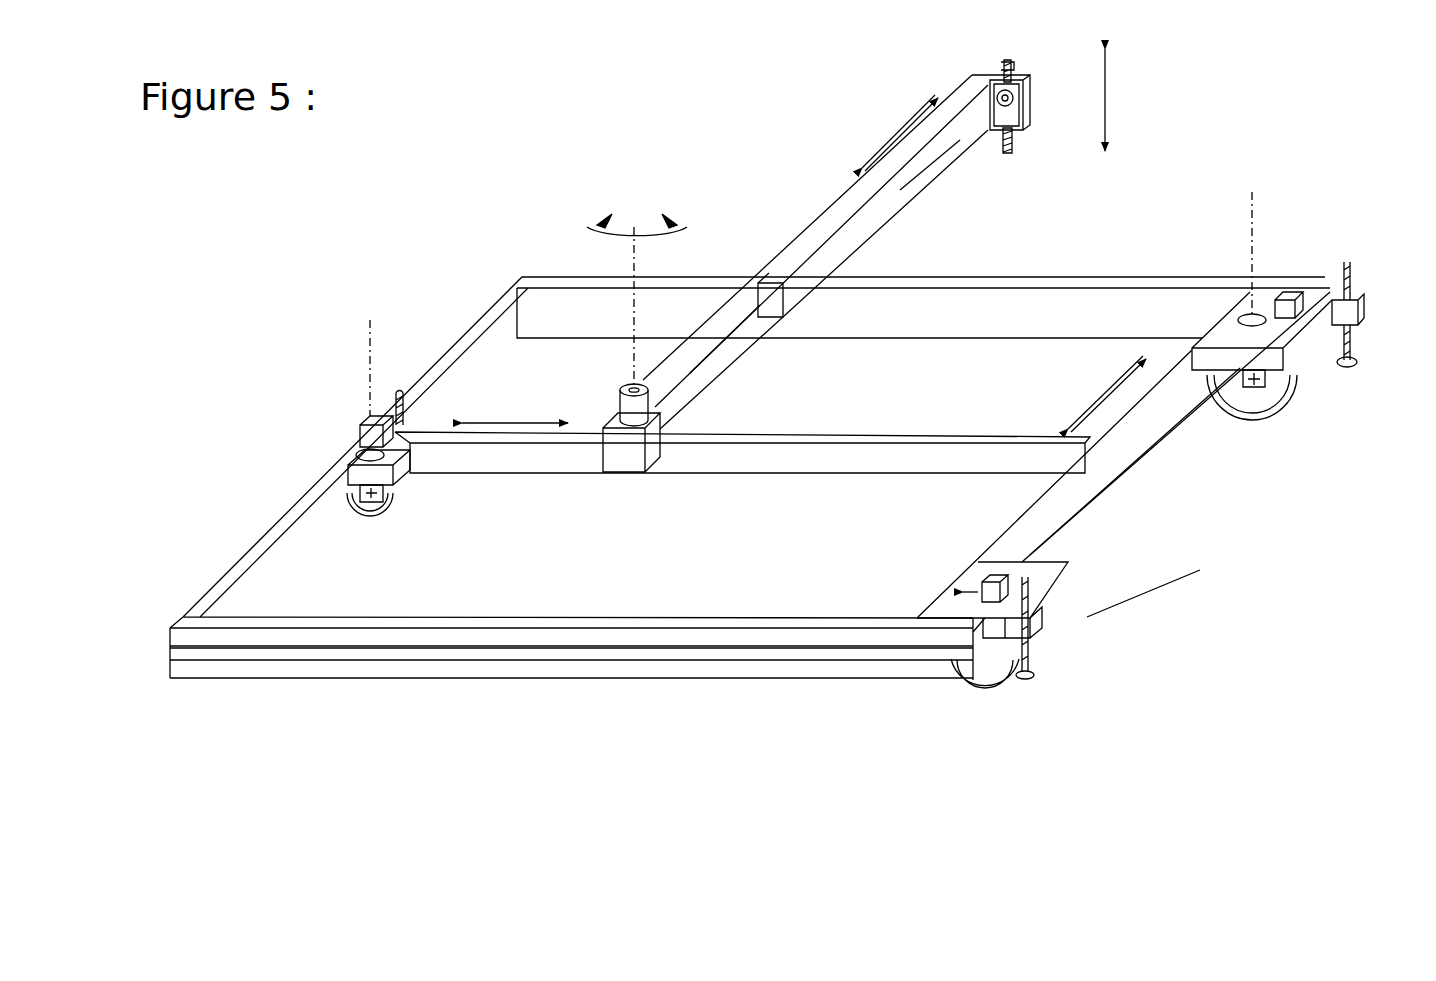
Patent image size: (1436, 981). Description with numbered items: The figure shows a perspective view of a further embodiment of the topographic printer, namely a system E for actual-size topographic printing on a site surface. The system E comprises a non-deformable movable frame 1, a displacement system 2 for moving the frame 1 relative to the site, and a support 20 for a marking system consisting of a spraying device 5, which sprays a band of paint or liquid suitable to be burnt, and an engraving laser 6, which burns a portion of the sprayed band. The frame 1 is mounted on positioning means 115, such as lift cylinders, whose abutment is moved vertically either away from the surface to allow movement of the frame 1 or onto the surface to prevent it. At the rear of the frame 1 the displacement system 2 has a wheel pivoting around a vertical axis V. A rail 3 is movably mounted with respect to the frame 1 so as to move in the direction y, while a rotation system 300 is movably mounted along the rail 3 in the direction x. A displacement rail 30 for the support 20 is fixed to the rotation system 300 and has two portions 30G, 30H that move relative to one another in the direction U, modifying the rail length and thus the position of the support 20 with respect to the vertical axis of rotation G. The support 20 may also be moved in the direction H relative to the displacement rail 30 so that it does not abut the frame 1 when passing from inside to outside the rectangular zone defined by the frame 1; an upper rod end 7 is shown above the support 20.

The frame 1 is at (420, 647).
The displacement system 2 is at (1045, 635).
The rail 3 is at (867, 460).
The rotation system 300 is at (619, 398).
The displacement rail 30 is at (812, 222).
The portion of the displacement rail 30G is at (700, 362).
The portion of the displacement rail 30H is at (932, 158).
The support 20 is at (1028, 76).
The engraving laser 6 is at (1030, 95).
The upper rod end 7 is at (1003, 65).
The spraying device 5 is at (1022, 135).
The positioning means 115 is at (1365, 293).
The system E is at (403, 270).
The vertical axis of rotation G is at (633, 227).
The direction H is at (1108, 98).
The direction U is at (893, 122).
The vertical axis V is at (1252, 192).
The direction X x is at (517, 425).
The direction Y y is at (1102, 380).